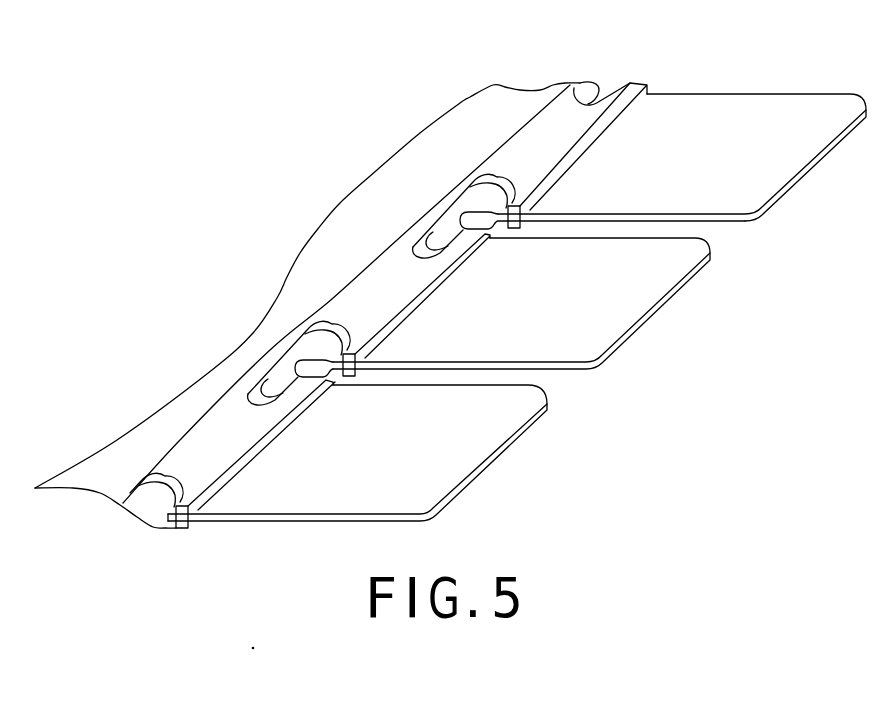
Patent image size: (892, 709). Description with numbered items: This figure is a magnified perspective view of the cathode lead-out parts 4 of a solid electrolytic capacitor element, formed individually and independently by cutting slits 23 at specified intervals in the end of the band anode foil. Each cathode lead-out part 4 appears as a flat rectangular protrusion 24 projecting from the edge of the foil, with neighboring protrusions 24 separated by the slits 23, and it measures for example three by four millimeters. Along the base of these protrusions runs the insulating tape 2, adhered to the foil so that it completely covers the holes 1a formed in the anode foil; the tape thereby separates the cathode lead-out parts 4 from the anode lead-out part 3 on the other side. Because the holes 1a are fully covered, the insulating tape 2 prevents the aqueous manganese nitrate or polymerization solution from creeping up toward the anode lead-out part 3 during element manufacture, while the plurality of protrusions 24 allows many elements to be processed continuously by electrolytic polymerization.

The hole 1a is at (448, 228).
The insulating tape 2 is at (562, 104).
The anode lead-out part 3 is at (256, 336).
The cathode lead-out part 4 is at (700, 103).
The slit 23 is at (698, 230).
The protrusion 24 is at (770, 172).